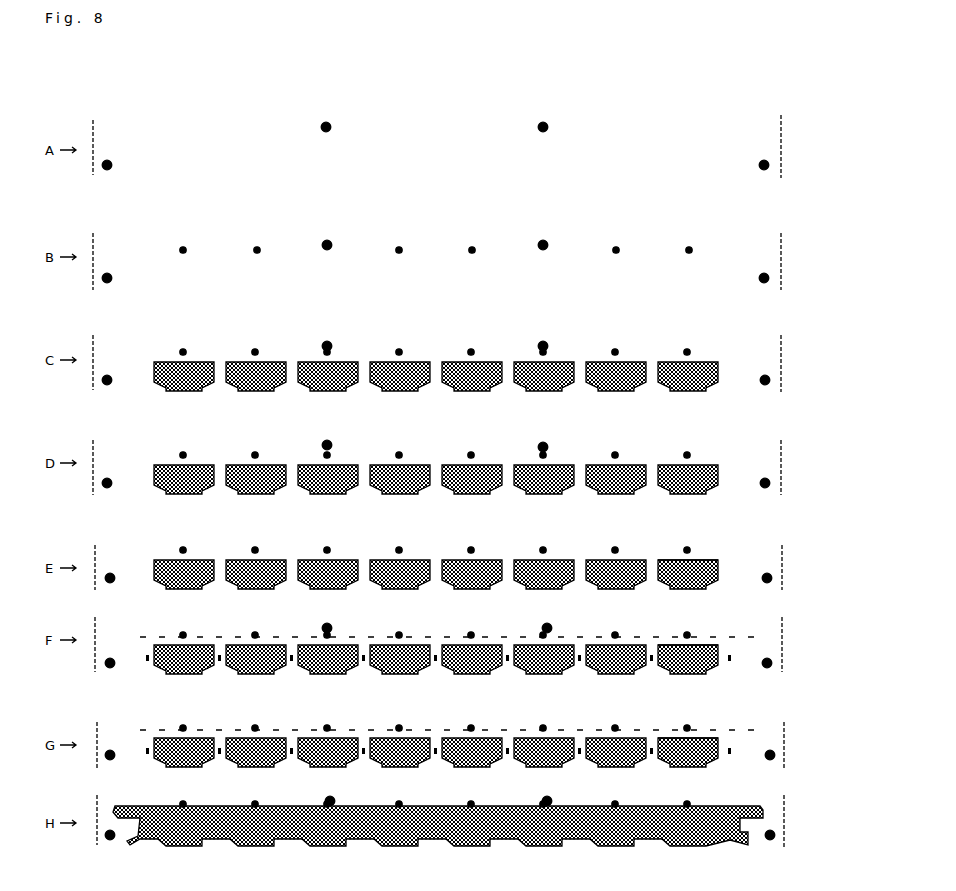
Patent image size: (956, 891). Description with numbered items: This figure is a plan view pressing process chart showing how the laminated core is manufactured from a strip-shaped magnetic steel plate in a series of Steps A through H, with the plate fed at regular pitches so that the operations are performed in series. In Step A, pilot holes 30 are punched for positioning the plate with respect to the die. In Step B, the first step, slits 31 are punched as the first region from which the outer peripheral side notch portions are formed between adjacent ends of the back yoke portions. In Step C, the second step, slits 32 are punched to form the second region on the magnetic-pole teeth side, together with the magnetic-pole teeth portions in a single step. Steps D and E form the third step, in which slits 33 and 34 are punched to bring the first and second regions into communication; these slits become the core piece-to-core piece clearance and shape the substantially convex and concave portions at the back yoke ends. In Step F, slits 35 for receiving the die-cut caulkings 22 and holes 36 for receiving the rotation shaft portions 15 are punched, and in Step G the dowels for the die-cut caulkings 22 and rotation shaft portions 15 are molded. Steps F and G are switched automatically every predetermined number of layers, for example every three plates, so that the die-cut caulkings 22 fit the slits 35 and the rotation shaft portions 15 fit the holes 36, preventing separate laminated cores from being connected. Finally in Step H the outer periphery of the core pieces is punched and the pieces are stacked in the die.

The pilot hole 30 is at (107, 165).
The slit 31 is at (436, 500).
The slit 32 is at (170, 362).
The slit 33 is at (690, 465).
The slit 34 is at (695, 556).
The slit 35 is at (731, 660).
The hole 36 is at (695, 640).
The die-cut caulking 22 is at (731, 750).
The rotation shaft portion 15 is at (697, 732).